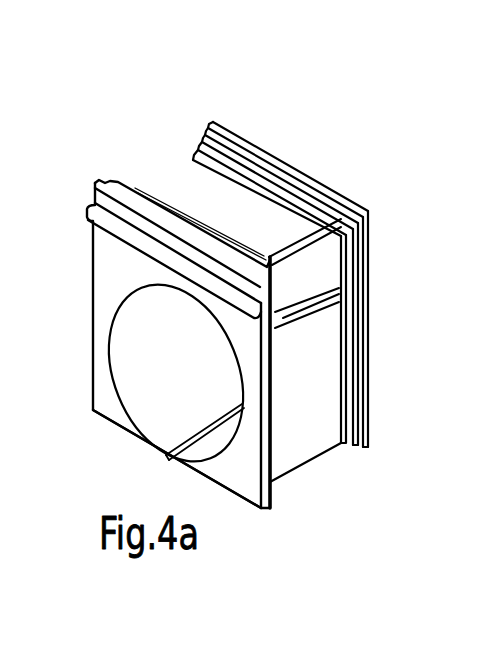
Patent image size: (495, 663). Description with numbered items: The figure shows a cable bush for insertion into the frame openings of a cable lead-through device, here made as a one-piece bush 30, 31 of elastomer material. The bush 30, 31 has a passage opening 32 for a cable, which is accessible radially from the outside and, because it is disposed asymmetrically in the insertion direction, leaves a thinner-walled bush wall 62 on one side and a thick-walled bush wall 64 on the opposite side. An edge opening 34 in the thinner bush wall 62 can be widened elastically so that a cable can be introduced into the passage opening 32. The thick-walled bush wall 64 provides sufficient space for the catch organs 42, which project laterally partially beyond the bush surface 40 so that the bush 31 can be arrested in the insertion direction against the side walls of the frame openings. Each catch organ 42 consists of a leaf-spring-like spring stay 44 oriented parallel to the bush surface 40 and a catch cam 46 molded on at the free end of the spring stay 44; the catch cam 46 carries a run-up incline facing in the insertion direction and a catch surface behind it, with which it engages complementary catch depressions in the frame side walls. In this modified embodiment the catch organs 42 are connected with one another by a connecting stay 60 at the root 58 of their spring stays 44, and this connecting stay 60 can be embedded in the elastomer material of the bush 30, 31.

The bush 30 is at (305, 384).
The bush 31 is at (360, 446).
The passage opening 32 is at (160, 353).
The edge opening 34 is at (207, 456).
The bush surface 40 is at (312, 418).
The catch organ 42 is at (366, 213).
The spring stay 44 is at (313, 276).
The catch cam 46 is at (292, 330).
The root 58 is at (299, 265).
The connecting stay 60 is at (197, 192).
The bush wall 62 is at (183, 460).
The bush wall 64 is at (142, 263).